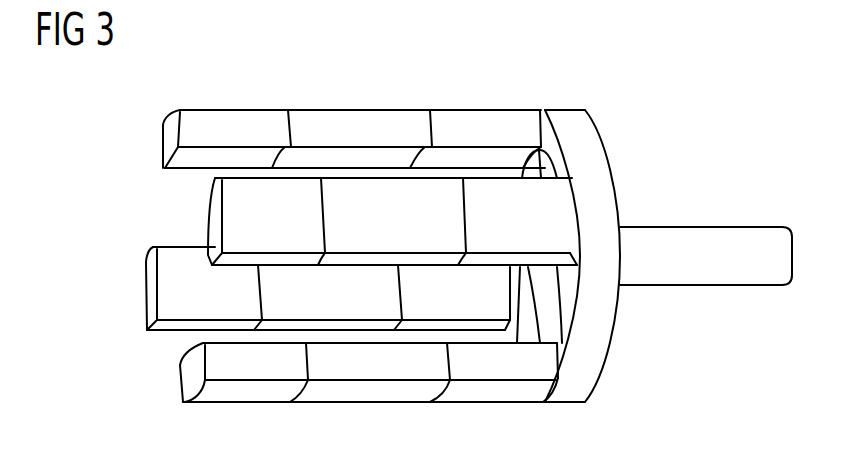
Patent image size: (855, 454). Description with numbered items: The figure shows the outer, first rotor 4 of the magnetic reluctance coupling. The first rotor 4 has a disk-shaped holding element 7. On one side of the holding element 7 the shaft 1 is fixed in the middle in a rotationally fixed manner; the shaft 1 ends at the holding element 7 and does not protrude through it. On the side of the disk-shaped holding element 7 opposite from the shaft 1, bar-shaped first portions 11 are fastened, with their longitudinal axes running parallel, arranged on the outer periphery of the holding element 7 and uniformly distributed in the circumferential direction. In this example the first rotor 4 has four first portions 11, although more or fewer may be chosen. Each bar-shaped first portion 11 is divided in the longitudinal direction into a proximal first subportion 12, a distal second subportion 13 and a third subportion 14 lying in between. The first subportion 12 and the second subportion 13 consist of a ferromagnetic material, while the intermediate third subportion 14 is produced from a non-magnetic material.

The shaft 1 is at (712, 243).
The first rotor 4 is at (92, 187).
The disk-shaped holding element 7 is at (598, 162).
The bar-shaped first portion 11 is at (130, 297).
The first subportion 12 is at (487, 118).
The second subportion 13 is at (241, 118).
The third subportion 14 is at (365, 122).